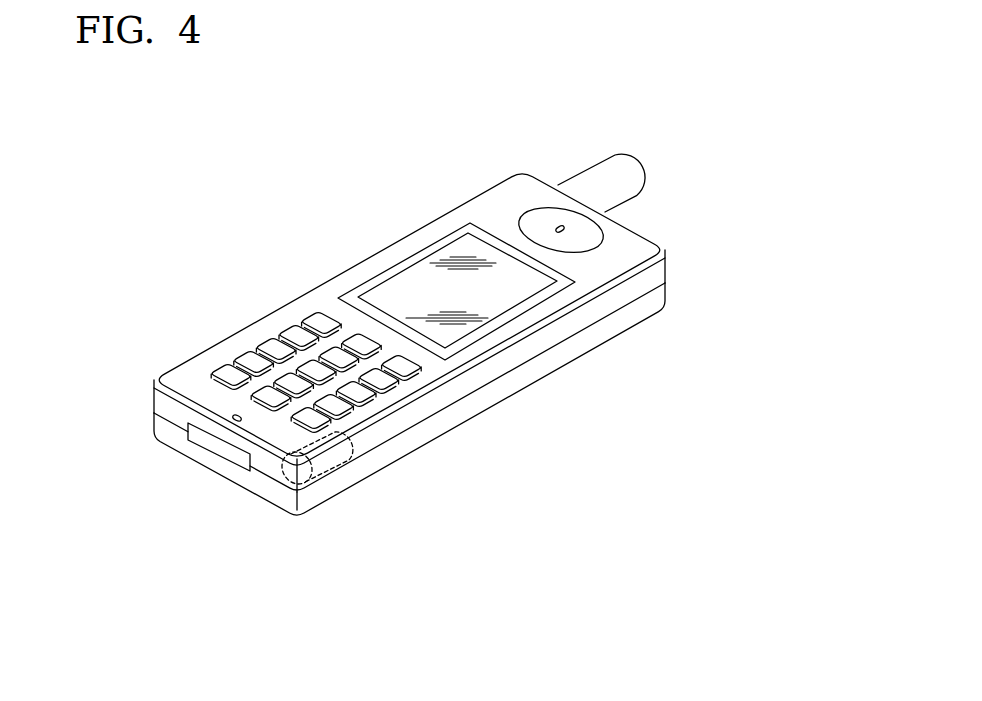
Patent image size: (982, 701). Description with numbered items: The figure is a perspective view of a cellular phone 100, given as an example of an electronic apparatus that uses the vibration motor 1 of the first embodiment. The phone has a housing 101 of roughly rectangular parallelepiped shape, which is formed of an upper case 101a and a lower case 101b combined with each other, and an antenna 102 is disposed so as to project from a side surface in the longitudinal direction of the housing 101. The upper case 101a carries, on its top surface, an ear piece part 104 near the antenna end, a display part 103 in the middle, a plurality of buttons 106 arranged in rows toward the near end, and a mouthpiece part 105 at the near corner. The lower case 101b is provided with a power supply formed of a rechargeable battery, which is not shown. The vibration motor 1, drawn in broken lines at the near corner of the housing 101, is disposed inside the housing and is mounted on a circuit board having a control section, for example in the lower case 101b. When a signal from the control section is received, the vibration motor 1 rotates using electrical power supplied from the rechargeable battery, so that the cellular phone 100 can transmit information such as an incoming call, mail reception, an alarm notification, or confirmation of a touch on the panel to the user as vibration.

The vibration motor 1 is at (341, 480).
The cellular phone 100 is at (468, 155).
The housing 101 is at (783, 248).
The upper case 101a is at (660, 270).
The lower case 101b is at (660, 299).
The antenna 102 is at (628, 158).
The display part 103 is at (422, 278).
The ear piece part 104 is at (582, 243).
The mouthpiece part 105 is at (232, 412).
The buttons 106 is at (316, 317).